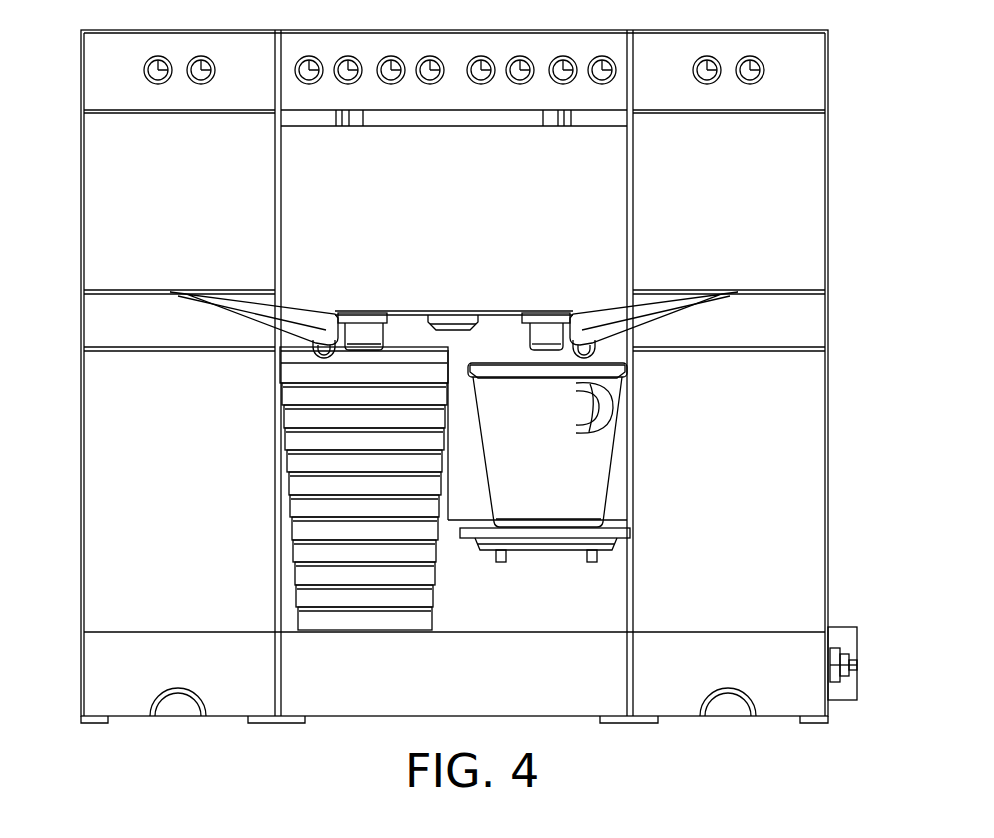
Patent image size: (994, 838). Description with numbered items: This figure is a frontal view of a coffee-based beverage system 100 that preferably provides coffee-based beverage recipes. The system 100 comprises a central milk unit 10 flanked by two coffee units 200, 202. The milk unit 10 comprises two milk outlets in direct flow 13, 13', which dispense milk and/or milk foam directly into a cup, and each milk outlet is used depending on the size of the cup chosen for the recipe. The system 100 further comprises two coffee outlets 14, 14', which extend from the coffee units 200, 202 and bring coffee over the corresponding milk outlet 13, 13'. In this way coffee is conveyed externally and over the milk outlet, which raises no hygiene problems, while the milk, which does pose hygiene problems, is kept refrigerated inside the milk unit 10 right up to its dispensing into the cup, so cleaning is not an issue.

The beverage system 100 is at (846, 124).
The coffee unit 200 is at (90, 206).
The coffee unit 202 is at (826, 206).
The milk unit 10 is at (282, 206).
The milk outlet 13 is at (397, 314).
The milk outlet 13' is at (518, 337).
The coffee outlet 14 is at (254, 325).
The coffee outlet 14' is at (657, 325).